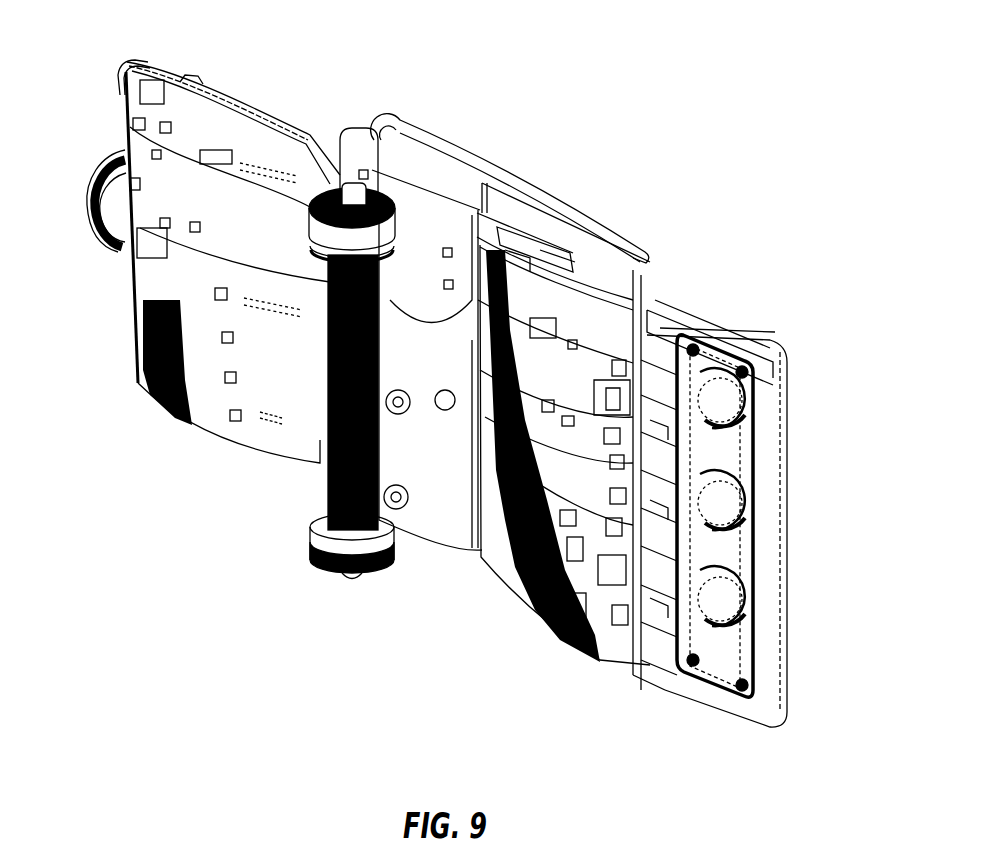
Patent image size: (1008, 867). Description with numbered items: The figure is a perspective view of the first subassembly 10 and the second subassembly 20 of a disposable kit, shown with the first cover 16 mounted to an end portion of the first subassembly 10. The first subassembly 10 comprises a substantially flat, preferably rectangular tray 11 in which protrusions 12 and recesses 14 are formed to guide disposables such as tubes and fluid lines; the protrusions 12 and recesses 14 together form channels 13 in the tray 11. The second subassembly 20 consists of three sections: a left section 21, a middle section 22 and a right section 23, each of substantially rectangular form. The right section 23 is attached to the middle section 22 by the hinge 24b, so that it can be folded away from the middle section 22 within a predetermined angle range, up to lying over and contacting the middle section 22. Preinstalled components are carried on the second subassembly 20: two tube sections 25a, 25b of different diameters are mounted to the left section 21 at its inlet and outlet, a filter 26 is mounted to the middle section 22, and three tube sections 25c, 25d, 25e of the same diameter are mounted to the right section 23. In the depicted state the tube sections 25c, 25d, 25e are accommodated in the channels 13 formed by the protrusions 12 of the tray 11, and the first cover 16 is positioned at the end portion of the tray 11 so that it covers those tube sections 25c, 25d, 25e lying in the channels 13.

The first subassembly 10 is at (804, 357).
The tray 11 is at (395, 125).
The protrusions 12 is at (572, 210).
The channels 13 is at (705, 375).
The recesses 14 is at (543, 230).
The first cover 16 is at (733, 365).
The second subassembly 20 is at (206, 450).
The left section 21 is at (208, 105).
The middle section 22 is at (363, 135).
The right section 23 is at (493, 250).
The hinge 24b is at (492, 482).
The tube section 25a is at (124, 72).
The tube section 25b is at (110, 160).
The tube section 25c is at (738, 433).
The tube section 25d is at (740, 530).
The tube section 25e is at (740, 624).
The filter 26 is at (328, 482).